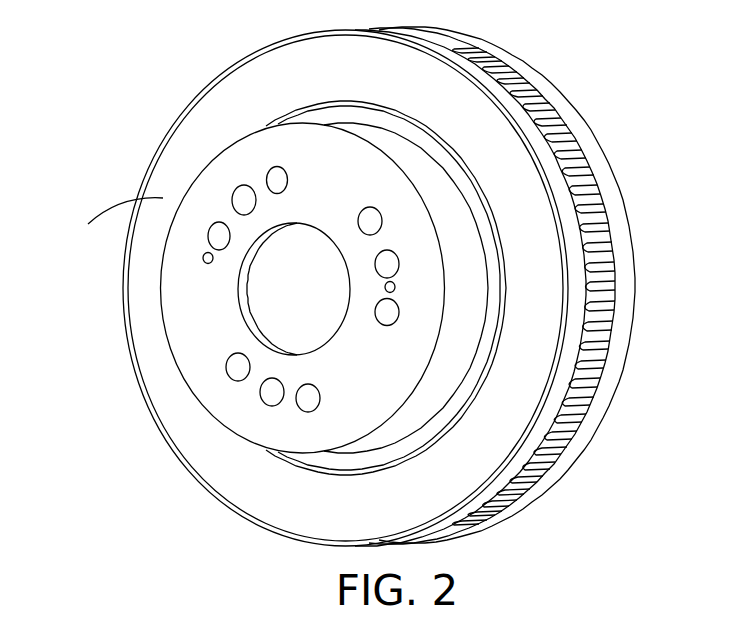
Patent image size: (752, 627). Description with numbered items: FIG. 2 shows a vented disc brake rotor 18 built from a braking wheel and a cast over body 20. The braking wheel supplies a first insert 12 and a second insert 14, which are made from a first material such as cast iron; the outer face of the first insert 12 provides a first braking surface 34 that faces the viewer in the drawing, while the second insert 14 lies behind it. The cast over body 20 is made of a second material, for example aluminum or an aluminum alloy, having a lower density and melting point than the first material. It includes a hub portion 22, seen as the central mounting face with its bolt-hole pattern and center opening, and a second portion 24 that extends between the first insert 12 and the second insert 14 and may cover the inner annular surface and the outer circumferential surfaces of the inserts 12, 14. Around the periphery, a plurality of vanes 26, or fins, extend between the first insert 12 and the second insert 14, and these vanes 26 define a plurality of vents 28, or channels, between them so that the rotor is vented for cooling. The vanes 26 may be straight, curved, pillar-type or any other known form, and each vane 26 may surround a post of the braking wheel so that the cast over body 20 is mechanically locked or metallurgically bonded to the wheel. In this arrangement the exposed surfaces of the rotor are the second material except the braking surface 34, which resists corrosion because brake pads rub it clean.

The first insert 12 is at (80, 110).
The second insert 14 is at (585, 133).
The disc brake rotor 18 is at (369, 286).
The cast over body 20 is at (237, 118).
The hub portion 22 is at (187, 332).
The second portion 24 is at (485, 222).
The vanes 26 is at (602, 205).
The vents 28 is at (607, 218).
The first braking surface 34 is at (118, 226).